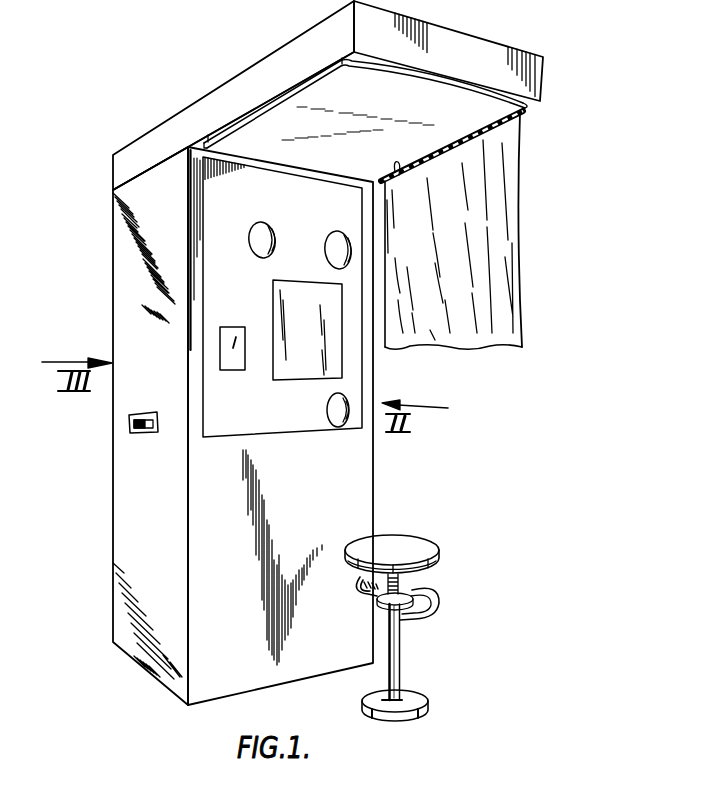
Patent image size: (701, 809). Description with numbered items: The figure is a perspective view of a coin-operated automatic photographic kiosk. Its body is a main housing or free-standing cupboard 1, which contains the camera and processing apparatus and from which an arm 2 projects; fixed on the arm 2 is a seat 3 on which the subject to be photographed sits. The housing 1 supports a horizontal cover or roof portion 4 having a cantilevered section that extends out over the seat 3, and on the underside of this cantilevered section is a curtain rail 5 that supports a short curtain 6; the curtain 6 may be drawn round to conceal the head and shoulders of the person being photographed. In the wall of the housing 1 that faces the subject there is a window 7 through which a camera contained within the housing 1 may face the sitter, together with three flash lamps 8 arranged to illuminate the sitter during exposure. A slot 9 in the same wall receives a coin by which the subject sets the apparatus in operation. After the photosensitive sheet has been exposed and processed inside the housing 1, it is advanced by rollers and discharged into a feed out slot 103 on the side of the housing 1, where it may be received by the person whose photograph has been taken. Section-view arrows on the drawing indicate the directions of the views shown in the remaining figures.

The main housing 1 is at (126, 632).
The arm 2 is at (367, 584).
The seat 3 is at (437, 562).
The roof portion 4 is at (201, 111).
The curtain rail 5 is at (280, 104).
The curtain 6 is at (505, 198).
The window 7 is at (282, 308).
The flash lamps 8 is at (256, 233).
The slot 9 is at (233, 360).
The feed out slot 103 is at (129, 426).